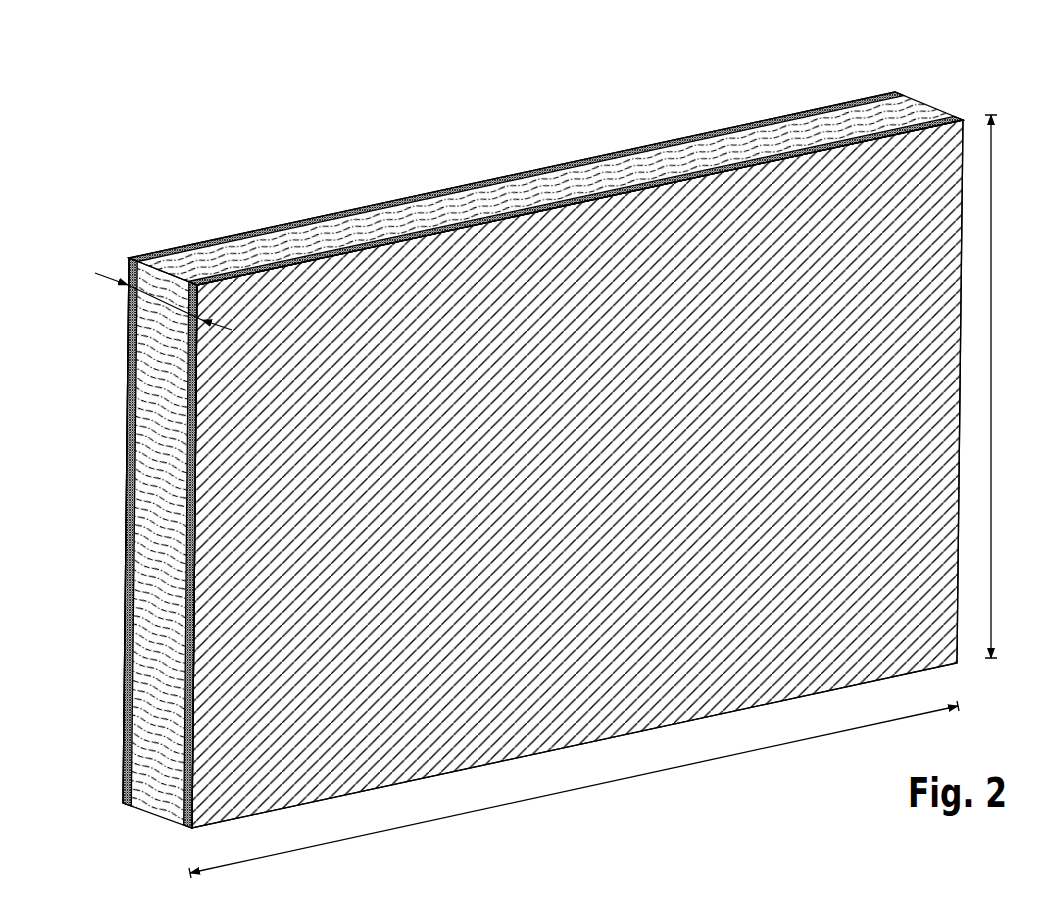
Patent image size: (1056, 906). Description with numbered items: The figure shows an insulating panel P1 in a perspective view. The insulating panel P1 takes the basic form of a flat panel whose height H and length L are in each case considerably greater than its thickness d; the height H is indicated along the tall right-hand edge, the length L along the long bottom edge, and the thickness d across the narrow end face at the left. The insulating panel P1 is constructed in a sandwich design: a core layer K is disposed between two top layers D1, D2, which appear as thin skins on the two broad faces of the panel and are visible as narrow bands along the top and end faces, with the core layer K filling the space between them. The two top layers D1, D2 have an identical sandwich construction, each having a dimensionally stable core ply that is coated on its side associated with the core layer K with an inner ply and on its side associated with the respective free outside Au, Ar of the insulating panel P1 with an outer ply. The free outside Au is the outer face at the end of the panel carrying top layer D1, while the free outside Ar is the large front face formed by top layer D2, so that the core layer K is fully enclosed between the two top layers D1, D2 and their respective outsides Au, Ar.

The insulating panel P1 is at (217, 178).
The top layer D1 is at (157, 251).
The top layer D2 is at (750, 163).
The core layer K is at (206, 266).
The free outside Au is at (127, 388).
The free outside Ar is at (522, 365).
The thickness d is at (163, 301).
The height H is at (1005, 386).
The length L is at (574, 789).